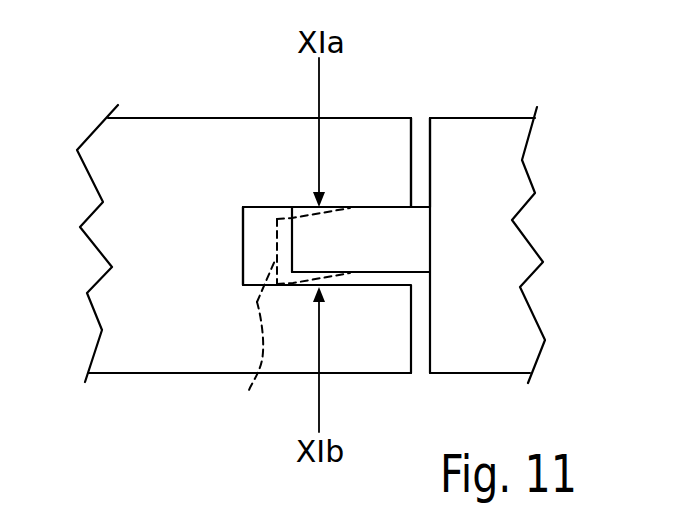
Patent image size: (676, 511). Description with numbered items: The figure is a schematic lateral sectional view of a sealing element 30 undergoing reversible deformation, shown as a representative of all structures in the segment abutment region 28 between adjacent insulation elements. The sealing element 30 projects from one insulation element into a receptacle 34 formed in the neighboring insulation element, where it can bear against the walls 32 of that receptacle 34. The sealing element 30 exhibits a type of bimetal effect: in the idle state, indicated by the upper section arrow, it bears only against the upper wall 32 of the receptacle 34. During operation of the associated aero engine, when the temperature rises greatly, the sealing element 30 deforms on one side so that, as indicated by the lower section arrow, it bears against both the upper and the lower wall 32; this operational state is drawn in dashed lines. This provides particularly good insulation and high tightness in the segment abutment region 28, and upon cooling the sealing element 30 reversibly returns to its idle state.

The segment abutment region 28 is at (426, 98).
The sealing element 30 is at (367, 238).
The wall 32 is at (277, 204).
The receptacle 34 is at (233, 278).